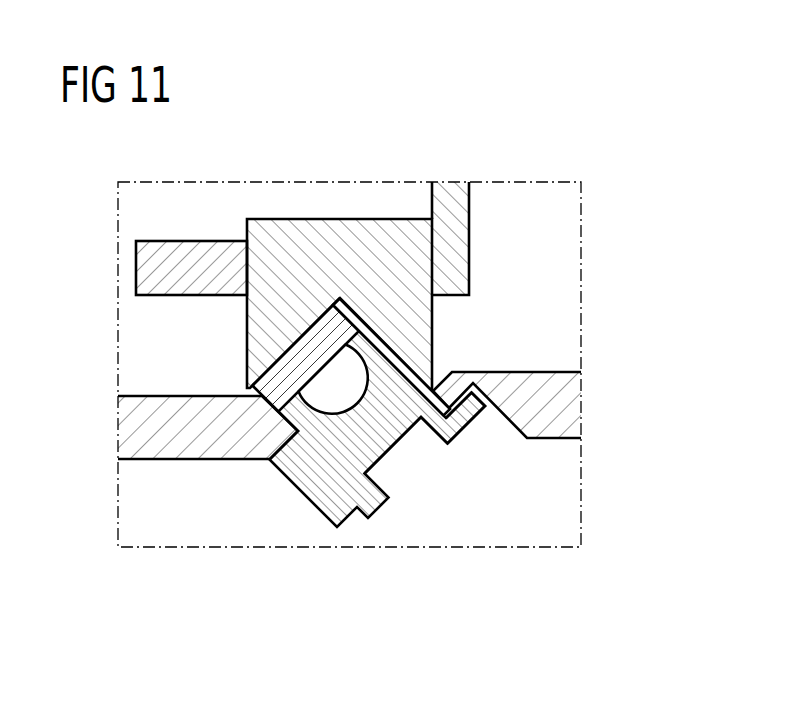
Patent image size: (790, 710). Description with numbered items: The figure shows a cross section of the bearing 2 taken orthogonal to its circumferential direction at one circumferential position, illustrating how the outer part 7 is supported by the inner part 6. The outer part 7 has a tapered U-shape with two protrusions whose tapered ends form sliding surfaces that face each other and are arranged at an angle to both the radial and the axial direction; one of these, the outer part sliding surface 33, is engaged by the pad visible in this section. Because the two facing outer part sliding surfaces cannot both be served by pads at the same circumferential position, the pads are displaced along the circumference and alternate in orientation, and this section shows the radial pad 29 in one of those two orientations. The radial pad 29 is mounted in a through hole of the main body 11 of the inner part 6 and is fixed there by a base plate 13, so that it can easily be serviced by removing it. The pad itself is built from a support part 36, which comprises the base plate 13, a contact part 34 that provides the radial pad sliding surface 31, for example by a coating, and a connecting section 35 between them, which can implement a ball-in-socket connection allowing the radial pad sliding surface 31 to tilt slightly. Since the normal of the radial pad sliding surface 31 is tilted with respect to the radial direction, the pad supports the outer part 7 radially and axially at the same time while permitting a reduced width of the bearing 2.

The bearing 2 is at (619, 232).
The inner part 6 is at (552, 351).
The outer part 7 is at (346, 243).
The main body 11 is at (572, 396).
The base plate 13 is at (398, 427).
The radial pad 29 is at (260, 463).
The radial pad sliding surface 31 is at (292, 327).
The outer part sliding surface 33 is at (318, 333).
The contact part 34 is at (268, 359).
The connecting section 35 is at (317, 397).
The support part 36 is at (334, 448).